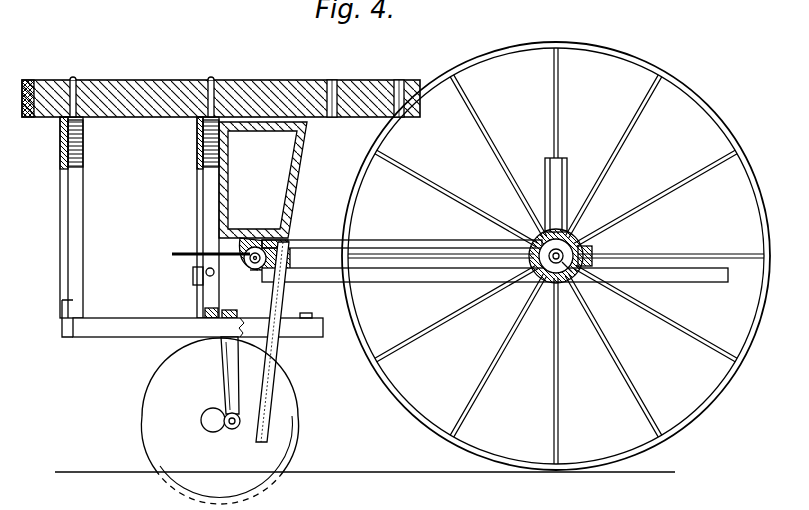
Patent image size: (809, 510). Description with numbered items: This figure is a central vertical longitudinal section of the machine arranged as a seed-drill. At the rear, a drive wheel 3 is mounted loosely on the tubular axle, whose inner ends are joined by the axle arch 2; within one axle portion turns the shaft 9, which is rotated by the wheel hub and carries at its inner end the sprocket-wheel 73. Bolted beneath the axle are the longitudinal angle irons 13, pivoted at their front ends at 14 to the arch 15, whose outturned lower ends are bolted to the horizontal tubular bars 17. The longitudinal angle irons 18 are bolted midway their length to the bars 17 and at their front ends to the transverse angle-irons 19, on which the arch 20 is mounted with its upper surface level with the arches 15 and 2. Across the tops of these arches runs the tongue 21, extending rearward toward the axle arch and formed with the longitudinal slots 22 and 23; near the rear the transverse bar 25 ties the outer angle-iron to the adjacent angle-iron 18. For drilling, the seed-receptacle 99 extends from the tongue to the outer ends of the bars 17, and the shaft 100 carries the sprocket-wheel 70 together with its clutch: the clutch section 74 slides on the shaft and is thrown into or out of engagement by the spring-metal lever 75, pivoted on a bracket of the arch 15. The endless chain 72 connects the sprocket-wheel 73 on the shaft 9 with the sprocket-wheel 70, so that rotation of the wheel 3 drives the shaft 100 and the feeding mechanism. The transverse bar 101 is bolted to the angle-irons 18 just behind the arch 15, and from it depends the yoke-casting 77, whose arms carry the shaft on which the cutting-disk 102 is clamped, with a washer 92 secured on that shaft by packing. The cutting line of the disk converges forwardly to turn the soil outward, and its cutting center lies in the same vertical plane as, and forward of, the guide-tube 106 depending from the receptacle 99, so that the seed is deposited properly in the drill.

The arch 2 is at (556, 195).
The wheel 3 is at (556, 256).
The shaft 9 is at (572, 275).
The angle iron 13 is at (495, 274).
The pivot 14 is at (206, 272).
The arch 15 is at (198, 217).
The tubular bar 17 is at (204, 308).
The angle iron 18 is at (198, 327).
The angle iron 19 is at (70, 333).
The arch 20 is at (60, 217).
The tongue 21 is at (221, 89).
The slot 22 is at (397, 92).
The slot 23 is at (331, 88).
The transverse bar 25 is at (312, 313).
The sprocket-wheel 70 is at (290, 252).
The endless chain 72 is at (402, 235).
The sprocket-wheel 73 is at (590, 250).
The clutch section 74 is at (259, 250).
The spring-metal lever 75 is at (171, 254).
The yoke-casting 77 is at (222, 367).
The washer 92 is at (230, 429).
The hopper 99 is at (263, 180).
The shaft 100 is at (256, 271).
The transverse bar 101 is at (240, 311).
The cutting-disk 102 is at (219, 421).
The guide-tube 106 is at (275, 345).